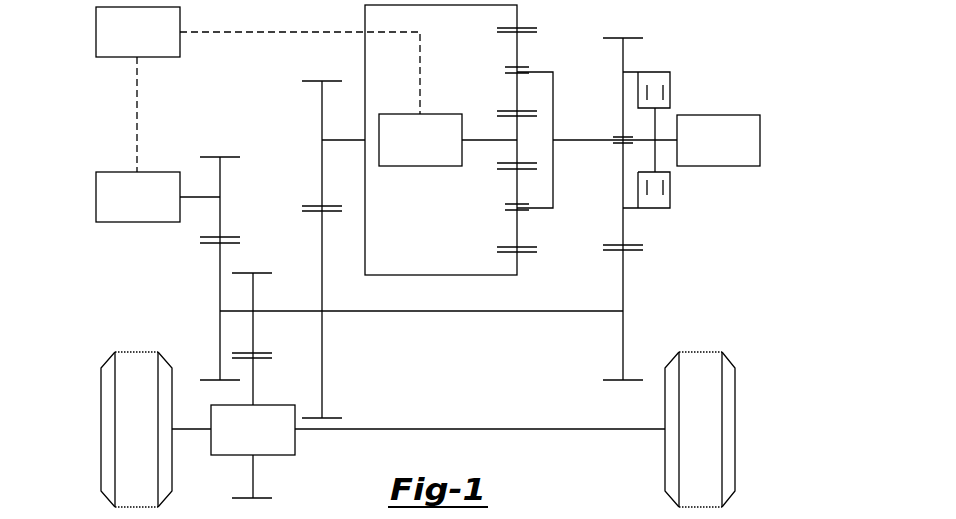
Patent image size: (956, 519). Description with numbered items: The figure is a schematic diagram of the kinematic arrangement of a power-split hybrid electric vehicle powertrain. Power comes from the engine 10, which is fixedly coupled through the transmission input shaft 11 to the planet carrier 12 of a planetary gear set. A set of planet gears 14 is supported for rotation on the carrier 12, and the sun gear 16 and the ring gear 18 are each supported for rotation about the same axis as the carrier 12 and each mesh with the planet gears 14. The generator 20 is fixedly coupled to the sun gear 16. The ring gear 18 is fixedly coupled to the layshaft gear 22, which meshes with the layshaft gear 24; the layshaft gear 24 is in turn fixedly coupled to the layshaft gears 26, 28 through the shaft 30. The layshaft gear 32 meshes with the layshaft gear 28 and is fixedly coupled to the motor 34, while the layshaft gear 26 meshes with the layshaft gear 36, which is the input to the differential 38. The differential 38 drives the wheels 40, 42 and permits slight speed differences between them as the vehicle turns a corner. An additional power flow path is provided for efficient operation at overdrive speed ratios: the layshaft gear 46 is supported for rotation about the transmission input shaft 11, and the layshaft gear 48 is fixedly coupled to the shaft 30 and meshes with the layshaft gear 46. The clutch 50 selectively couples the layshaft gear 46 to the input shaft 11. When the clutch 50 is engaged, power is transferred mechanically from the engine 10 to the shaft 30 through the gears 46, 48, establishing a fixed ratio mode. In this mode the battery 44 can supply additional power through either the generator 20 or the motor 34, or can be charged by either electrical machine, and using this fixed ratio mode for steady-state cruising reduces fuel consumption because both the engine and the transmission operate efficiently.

The engine 10 is at (761, 141).
The transmission input shaft 11 is at (583, 140).
The planet carrier 12 is at (556, 175).
The planet gears 14 is at (517, 230).
The sun gear 16 is at (514, 152).
The ring gear 18 is at (519, 263).
The generator 20 is at (420, 167).
The layshaft gear 22 is at (321, 107).
The layshaft gear 24 is at (323, 364).
The layshaft gear 26 is at (255, 291).
The layshaft gear 28 is at (220, 283).
The shaft 30 is at (450, 312).
The layshaft gear 32 is at (222, 176).
The motor 34 is at (96, 199).
The layshaft gear 36 is at (255, 478).
The differential 38 is at (296, 449).
The wheel 40 is at (101, 430).
The wheel 42 is at (736, 428).
The battery 44 is at (96, 33).
The layshaft gear 46 is at (623, 60).
The layshaft gear 48 is at (624, 330).
The clutch 50 is at (672, 86).